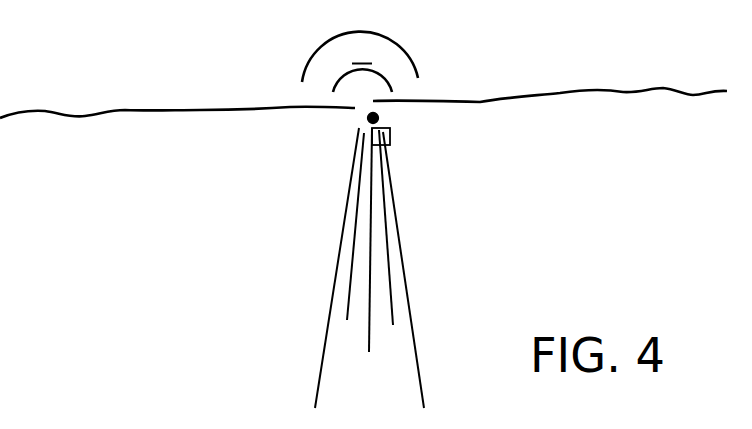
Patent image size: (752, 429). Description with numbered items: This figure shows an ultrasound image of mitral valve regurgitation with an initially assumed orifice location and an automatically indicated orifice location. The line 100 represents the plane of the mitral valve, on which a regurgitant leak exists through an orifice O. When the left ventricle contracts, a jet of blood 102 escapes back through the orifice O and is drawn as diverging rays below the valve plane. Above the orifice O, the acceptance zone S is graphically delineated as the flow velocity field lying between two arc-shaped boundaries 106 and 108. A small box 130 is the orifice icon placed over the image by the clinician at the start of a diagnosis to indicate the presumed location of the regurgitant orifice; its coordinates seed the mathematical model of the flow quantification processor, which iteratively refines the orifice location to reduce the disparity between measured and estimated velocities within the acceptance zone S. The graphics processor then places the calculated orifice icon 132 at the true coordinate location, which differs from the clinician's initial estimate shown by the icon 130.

The line 100 is at (157, 108).
The jet of blood 102 is at (397, 233).
The boundary 106 is at (315, 53).
The boundary 108 is at (390, 78).
The orifice icon 130 is at (390, 137).
The calculated orifice icon 132 is at (380, 117).
The orifice O is at (355, 113).